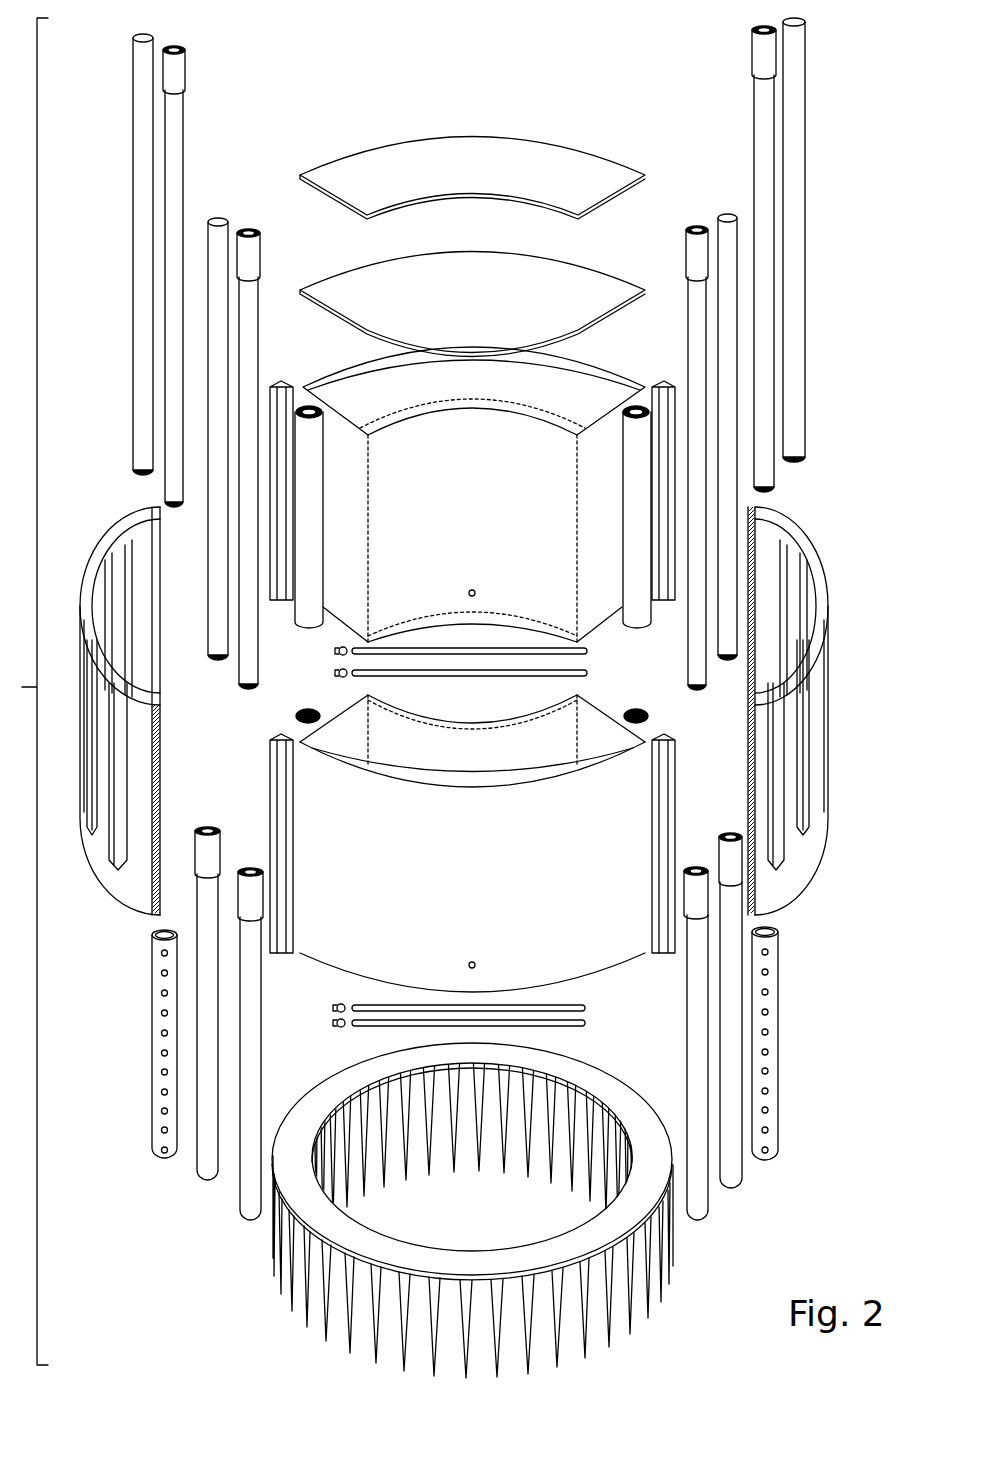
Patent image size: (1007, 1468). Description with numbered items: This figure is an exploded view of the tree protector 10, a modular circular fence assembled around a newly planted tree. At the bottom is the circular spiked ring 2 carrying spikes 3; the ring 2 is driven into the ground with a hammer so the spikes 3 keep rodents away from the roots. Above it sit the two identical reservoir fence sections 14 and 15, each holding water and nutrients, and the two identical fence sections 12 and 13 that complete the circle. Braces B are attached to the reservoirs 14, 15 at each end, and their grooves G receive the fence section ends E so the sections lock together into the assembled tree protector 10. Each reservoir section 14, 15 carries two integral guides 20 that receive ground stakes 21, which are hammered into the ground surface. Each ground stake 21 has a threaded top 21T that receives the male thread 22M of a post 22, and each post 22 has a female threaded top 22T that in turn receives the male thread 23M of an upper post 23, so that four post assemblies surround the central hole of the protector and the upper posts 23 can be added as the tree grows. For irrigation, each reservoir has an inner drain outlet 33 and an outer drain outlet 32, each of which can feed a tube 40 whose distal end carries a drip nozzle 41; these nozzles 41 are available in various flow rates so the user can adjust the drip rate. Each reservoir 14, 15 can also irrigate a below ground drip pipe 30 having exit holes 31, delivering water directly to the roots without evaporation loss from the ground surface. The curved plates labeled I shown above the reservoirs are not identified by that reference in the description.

The tree protector 10 is at (24, 691).
The circular spiked ring 2 is at (330, 1223).
The spikes 3 is at (345, 1297).
The fence section 12 is at (88, 593).
The fence section 13 is at (818, 583).
The reservoir fence section 14 is at (456, 873).
The reservoir fence section 15 is at (450, 500).
The integral guides 20 is at (312, 524).
The ground stakes 21 is at (203, 1163).
The threaded top 21T is at (205, 850).
The post 22 is at (249, 290).
The female threaded top 22T is at (177, 72).
The male thread 22M is at (170, 500).
The upper post 23 is at (140, 75).
The male thread 23M is at (140, 470).
The below ground drip pipe 30 is at (152, 1113).
The exit holes 31 is at (160, 1052).
The outer drain outlet 32 is at (476, 962).
The inner drain outlet 33 is at (476, 589).
The tube 40 is at (457, 650).
The drip nozzle 41 is at (338, 651).
The braces B is at (275, 760).
The fence section ends E is at (154, 897).
The grooves G is at (303, 390).
The curved insert plate I is at (465, 170).